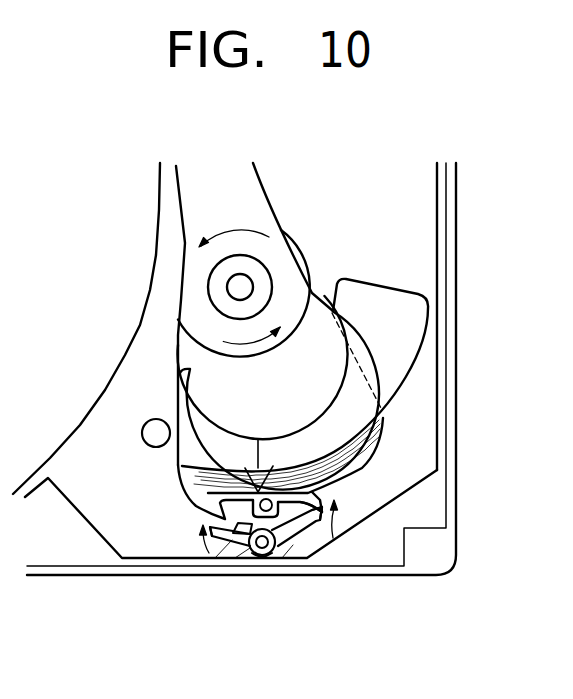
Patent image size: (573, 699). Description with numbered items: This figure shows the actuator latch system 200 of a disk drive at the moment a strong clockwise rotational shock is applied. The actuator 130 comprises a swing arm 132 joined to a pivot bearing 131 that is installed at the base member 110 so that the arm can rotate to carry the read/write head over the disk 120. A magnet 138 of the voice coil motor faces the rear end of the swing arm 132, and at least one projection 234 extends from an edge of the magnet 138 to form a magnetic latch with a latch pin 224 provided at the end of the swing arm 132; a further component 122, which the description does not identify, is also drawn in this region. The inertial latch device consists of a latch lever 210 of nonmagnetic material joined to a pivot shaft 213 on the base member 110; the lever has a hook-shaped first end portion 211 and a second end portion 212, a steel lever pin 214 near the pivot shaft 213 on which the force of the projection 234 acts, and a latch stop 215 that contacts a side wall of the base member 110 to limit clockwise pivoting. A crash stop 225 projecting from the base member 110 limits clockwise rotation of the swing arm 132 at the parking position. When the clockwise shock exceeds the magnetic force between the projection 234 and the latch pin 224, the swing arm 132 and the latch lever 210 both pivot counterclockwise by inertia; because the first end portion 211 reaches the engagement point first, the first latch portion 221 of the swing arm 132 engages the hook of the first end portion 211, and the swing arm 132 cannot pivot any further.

The base member 110 is at (387, 565).
The disk 120 is at (22, 470).
The actuator 130 is at (303, 190).
The pivot bearing 131 is at (250, 285).
The swing arm 132 is at (272, 262).
The magnet 138 is at (415, 320).
The guide body 122 is at (190, 506).
The actuator latch system 200 is at (312, 566).
The latch lever 210 is at (248, 547).
The first end portion 211 is at (306, 557).
The second end portion 212 is at (212, 531).
The pivot shaft 213 is at (263, 550).
The lever pin 214 is at (217, 530).
The latch stop 215 is at (270, 555).
The first latch portion 221 is at (308, 503).
The latch pin 224 is at (255, 493).
The crash stop 225 is at (147, 447).
The projection 234 is at (262, 473).